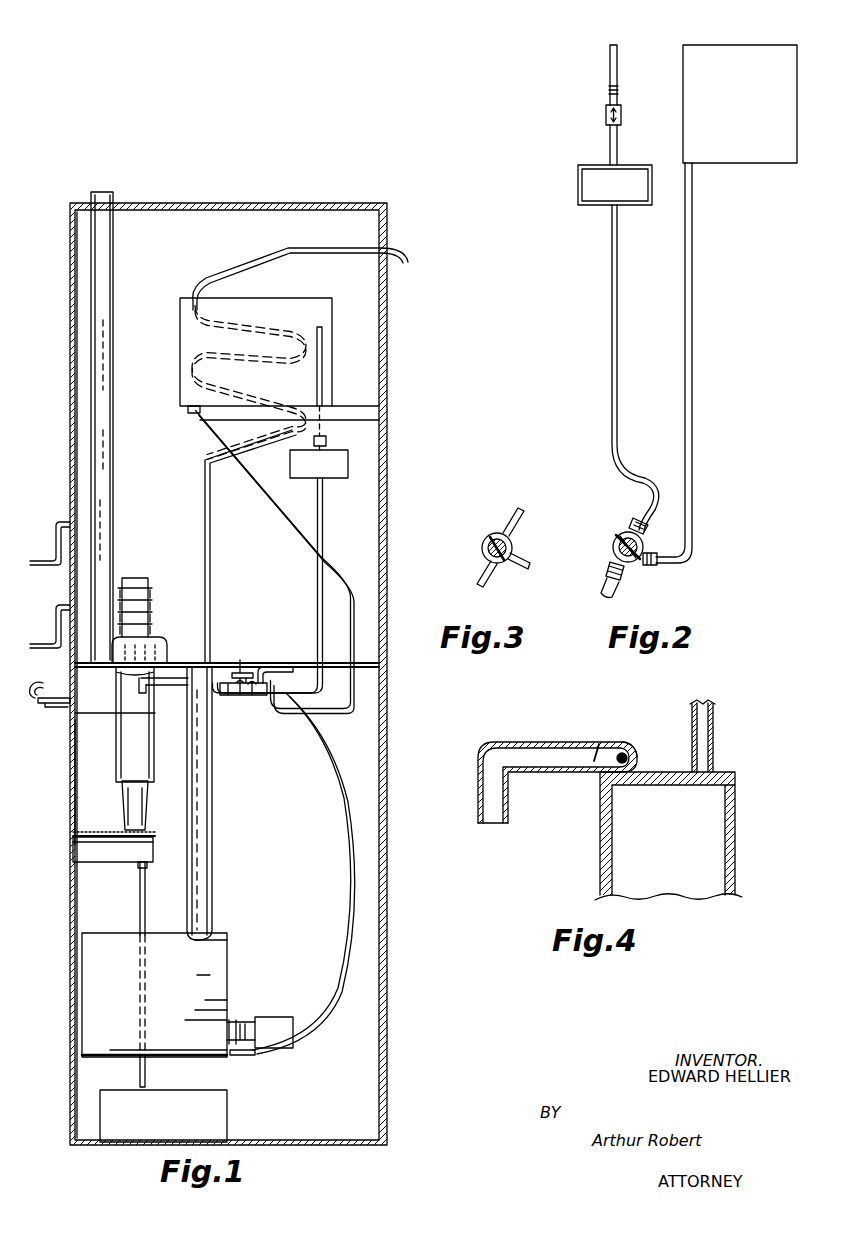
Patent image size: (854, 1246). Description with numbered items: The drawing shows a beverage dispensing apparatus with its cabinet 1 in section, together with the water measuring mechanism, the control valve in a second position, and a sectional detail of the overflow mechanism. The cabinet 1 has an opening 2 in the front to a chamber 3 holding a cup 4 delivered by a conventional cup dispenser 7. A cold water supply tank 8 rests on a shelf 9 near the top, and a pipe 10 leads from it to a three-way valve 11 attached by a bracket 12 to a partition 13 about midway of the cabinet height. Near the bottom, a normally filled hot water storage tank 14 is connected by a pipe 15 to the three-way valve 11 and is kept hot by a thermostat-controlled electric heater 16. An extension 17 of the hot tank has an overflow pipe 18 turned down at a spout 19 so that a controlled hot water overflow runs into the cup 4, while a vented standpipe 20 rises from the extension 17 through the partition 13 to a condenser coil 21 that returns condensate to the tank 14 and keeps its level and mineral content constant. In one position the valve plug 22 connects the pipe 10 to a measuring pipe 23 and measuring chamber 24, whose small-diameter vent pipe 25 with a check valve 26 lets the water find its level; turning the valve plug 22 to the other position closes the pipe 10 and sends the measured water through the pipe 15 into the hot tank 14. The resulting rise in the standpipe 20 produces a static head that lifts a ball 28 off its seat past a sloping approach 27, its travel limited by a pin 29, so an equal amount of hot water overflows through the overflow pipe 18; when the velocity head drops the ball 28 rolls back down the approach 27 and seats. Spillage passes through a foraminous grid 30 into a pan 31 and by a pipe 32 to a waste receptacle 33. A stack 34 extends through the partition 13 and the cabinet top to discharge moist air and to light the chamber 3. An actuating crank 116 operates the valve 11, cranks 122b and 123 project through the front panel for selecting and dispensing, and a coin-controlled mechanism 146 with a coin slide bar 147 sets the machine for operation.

In FIG. 1, the cabinet 1 is at (384, 651).
In FIG. 1, the opening 2 is at (69, 778).
In FIG. 1, the chamber 3 is at (96, 763).
In FIG. 1, the cup 4 is at (130, 798).
In FIG. 1, the cup dispenser 7 is at (160, 641).
In FIG. 1, the cold water supply tank 8 is at (181, 317).
In FIG. 2, the cold water supply tank 8 is at (745, 133).
In FIG. 3, the cold water supply tank 8 is at (525, 560).
In FIG. 1, the shelf 9 is at (368, 412).
In FIG. 1, the pipe 10 is at (262, 494).
In FIG. 2, the pipe 10 is at (692, 437).
In FIG. 1, the three-way valve 11 is at (246, 693).
In FIG. 2, the three-way valve 11 is at (644, 541).
In FIG. 3, the three-way valve 11 is at (510, 546).
In FIG. 1, the bracket 12 is at (284, 667).
In FIG. 1, the partition 13 is at (303, 662).
In FIG. 1, the hot water storage tank 14 is at (208, 977).
In FIG. 1, the pipe 15 is at (341, 770).
In FIG. 2, the pipe 15 is at (611, 585).
In FIG. 3, the pipe 15 is at (482, 575).
In FIG. 1, the heater 16 is at (271, 1017).
In FIG. 1, the extension 17 is at (212, 797).
In FIG. 4, the extension 17 is at (603, 860).
In FIG. 1, the overflow pipe 18 is at (173, 686).
In FIG. 4, the overflow pipe 18 is at (556, 741).
In FIG. 1, the spout 19 is at (139, 686).
In FIG. 4, the spout 19 is at (478, 802).
In FIG. 1, the standpipe 20 is at (204, 542).
In FIG. 4, the standpipe 20 is at (714, 741).
In FIG. 1, the condenser coil 21 is at (281, 350).
In FIG. 2, the valve plug 22 is at (618, 541).
In FIG. 3, the valve plug 22 is at (485, 549).
In FIG. 1, the measuring pipe 23 is at (320, 599).
In FIG. 2, the measuring pipe 23 is at (619, 372).
In FIG. 3, the measuring pipe 23 is at (516, 518).
In FIG. 1, the measuring chamber 24 is at (290, 464).
In FIG. 2, the measuring chamber 24 is at (578, 190).
In FIG. 1, the vent pipe 25 is at (324, 336).
In FIG. 2, the vent pipe 25 is at (620, 147).
In FIG. 1, the check valve 26 is at (326, 441).
In FIG. 2, the check valve 26 is at (606, 112).
In FIG. 4, the sloping approach 27 is at (627, 751).
In FIG. 4, the ball 28 is at (630, 766).
In FIG. 4, the pin 29 is at (598, 745).
In FIG. 1, the foraminous grid 30 is at (86, 829).
In FIG. 1, the pan 31 is at (118, 856).
In FIG. 1, the pipe 32 is at (140, 899).
In FIG. 1, the waste receptacle 33 is at (222, 1108).
In FIG. 1, the stack 34 is at (113, 422).
In FIG. 1, the actuating crank 116 is at (240, 672).
In FIG. 1, the crank 122b is at (33, 560).
In FIG. 1, the crank 123 is at (40, 645).
In FIG. 1, the coin-controlled mechanism 146 is at (58, 705).
In FIG. 1, the slide bar 147 is at (38, 684).